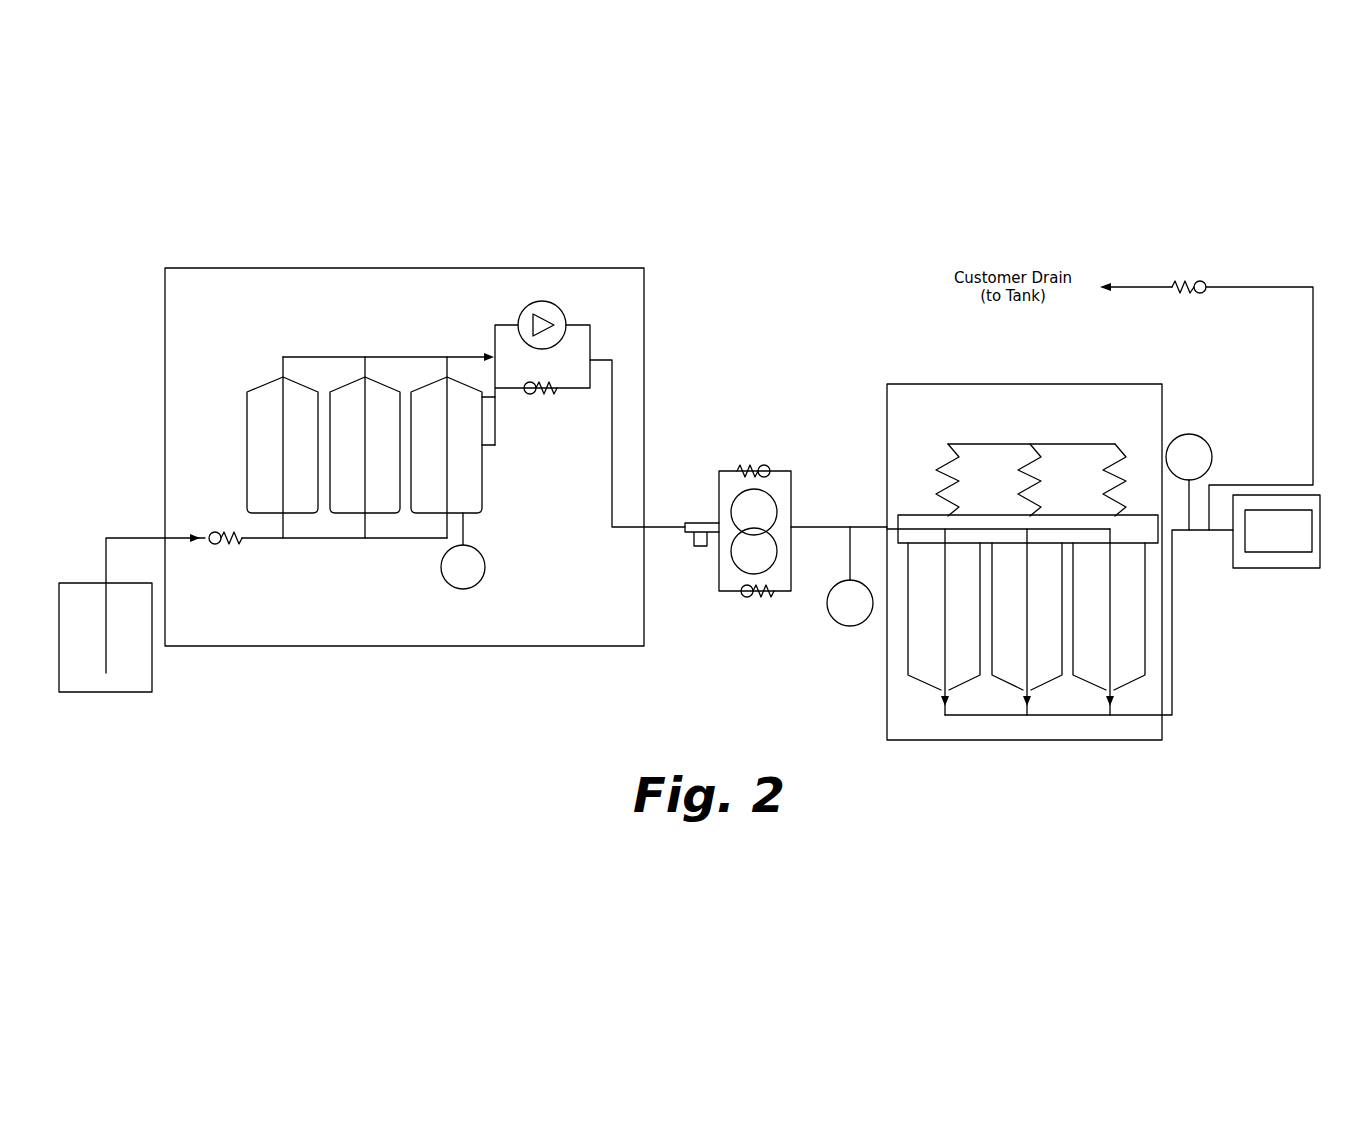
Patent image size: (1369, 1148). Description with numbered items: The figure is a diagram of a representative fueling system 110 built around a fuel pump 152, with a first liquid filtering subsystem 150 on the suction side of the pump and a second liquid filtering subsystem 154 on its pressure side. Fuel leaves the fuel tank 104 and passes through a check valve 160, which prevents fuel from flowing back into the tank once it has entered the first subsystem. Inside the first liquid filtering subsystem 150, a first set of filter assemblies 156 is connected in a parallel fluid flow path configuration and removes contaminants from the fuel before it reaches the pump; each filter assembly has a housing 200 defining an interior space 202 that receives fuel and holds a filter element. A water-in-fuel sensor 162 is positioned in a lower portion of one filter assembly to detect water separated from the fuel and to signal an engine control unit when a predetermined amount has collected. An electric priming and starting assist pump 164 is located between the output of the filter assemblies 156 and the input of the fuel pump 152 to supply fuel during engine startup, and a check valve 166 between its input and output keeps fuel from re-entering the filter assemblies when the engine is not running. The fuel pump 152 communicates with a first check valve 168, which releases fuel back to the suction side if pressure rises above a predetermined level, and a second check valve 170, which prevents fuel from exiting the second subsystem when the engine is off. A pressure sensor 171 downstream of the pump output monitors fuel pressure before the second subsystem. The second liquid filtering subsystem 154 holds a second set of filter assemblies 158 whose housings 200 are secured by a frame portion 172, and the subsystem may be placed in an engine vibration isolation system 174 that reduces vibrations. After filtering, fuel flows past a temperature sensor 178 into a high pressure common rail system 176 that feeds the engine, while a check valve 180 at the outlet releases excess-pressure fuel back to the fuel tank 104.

The fuel tank 104 is at (86, 582).
The fueling system 110 is at (700, 223).
The first liquid filtering subsystem 150 is at (382, 268).
The fuel pump 152 is at (778, 507).
The second liquid filtering subsystem 154 is at (1063, 384).
The filter assemblies 156 is at (270, 394).
The filter assemblies 158 is at (964, 650).
The check valve 160 is at (222, 546).
The water-in-fuel sensor 162 is at (466, 592).
The priming and starting assist pump 164 is at (556, 306).
The check valve 166 is at (532, 396).
The first check valve 168 is at (748, 467).
The second check valve 170 is at (752, 600).
The pressure sensor 171 is at (838, 623).
The frame portion 172 is at (1143, 533).
The engine vibration isolation system 174 is at (1016, 452).
The high pressure common rail system 176 is at (1312, 514).
The temperature sensor 178 is at (1199, 438).
The check valve 180 is at (1177, 283).
The housing 200 is at (242, 402).
The interior space 202 is at (303, 405).